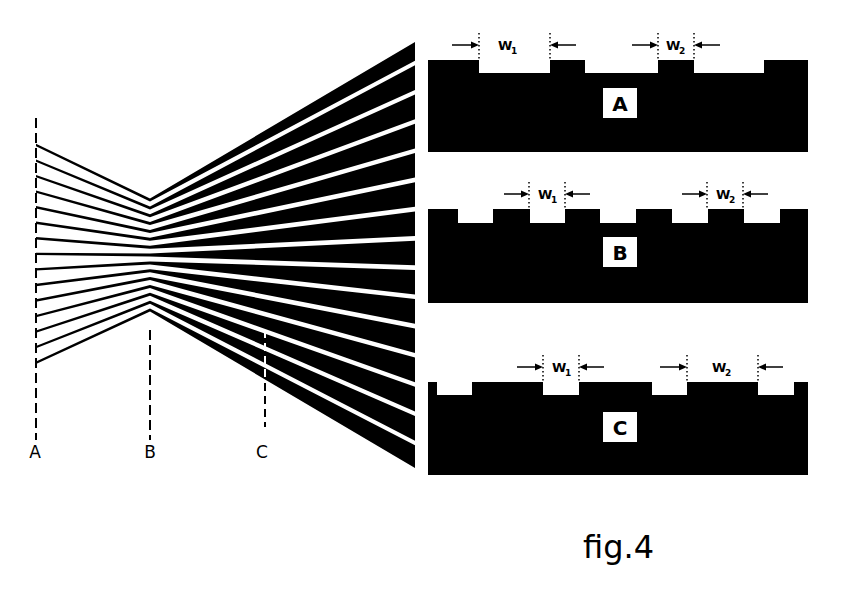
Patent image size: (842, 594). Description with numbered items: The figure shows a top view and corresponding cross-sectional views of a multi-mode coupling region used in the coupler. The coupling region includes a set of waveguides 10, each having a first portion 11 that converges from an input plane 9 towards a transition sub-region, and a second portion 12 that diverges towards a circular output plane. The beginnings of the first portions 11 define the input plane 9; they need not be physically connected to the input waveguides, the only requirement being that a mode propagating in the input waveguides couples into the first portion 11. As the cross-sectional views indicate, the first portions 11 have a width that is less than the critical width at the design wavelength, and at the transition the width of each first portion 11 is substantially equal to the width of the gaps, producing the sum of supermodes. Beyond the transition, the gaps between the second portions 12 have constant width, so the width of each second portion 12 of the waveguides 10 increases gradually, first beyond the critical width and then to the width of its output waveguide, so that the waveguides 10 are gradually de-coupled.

The input plane 9 is at (37, 121).
The waveguides 10 is at (587, 60).
The first portion 11 is at (78, 164).
The second portion 12 is at (310, 104).